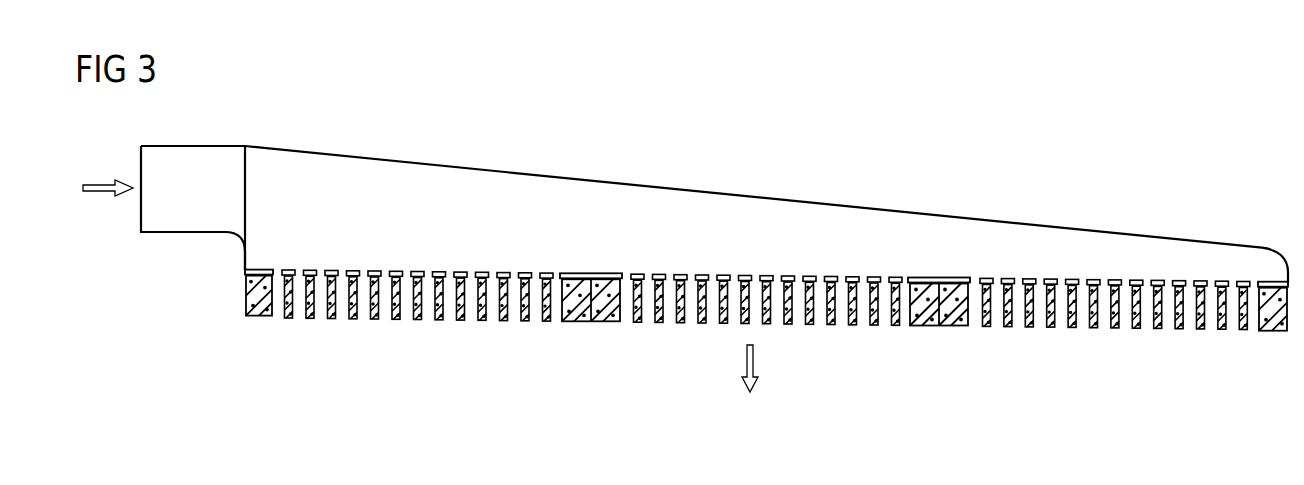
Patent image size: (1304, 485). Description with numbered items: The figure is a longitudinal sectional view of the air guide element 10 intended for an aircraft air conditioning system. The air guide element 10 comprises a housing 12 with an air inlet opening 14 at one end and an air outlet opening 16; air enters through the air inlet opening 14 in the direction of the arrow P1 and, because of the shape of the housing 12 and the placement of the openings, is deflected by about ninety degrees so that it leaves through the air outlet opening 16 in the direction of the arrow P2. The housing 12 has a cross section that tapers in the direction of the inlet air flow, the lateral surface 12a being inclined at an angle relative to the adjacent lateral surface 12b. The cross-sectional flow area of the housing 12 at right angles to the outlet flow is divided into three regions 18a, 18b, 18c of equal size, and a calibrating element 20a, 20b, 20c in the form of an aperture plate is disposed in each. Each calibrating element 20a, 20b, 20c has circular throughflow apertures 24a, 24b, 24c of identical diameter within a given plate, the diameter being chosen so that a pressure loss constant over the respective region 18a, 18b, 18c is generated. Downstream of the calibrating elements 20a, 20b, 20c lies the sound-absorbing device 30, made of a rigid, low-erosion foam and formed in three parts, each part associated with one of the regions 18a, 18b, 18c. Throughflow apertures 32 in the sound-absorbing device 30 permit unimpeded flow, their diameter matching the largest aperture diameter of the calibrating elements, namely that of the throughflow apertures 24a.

The air guide element 10 is at (936, 124).
The housing 12 is at (775, 210).
The lateral surface 12a is at (595, 178).
The lateral surface 12b is at (243, 258).
The air inlet opening 14 is at (140, 207).
The air outlet opening 16 is at (1148, 330).
The region 18a is at (399, 328).
The region 18b is at (766, 332).
The region 18c is at (1134, 317).
The calibrating element 20a is at (312, 268).
The calibrating element 20b is at (658, 275).
The calibrating element 20c is at (1003, 283).
The throughflow apertures 24a is at (513, 278).
The throughflow apertures 24b is at (862, 287).
The throughflow apertures 24c is at (1212, 298).
The sound-absorbing device 30 is at (600, 324).
The throughflow apertures 32 is at (883, 316).
The arrow P1 is at (100, 181).
The arrow P2 is at (753, 360).